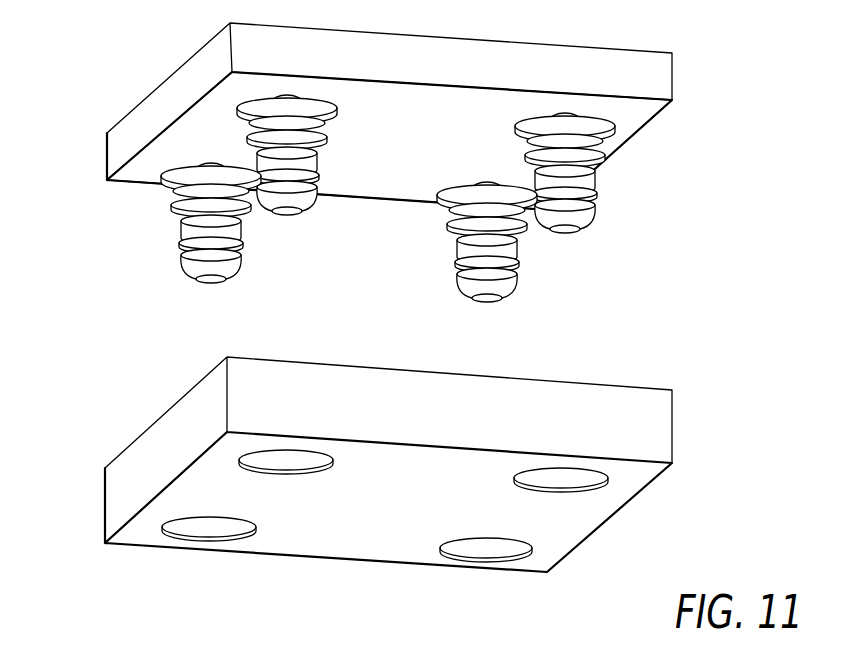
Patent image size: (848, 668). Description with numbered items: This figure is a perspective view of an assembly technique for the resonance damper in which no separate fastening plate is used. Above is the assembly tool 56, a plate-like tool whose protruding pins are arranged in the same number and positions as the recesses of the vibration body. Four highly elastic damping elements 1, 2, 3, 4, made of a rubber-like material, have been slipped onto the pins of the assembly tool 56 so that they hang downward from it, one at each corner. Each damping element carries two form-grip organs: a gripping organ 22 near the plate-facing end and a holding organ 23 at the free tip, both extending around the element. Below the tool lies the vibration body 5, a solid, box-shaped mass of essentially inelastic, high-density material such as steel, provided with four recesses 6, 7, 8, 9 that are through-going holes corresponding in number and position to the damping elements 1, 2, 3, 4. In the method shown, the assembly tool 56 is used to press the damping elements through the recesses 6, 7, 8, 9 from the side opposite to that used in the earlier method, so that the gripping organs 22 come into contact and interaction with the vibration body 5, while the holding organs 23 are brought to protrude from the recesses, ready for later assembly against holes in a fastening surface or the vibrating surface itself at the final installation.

The assembly tool 56 is at (678, 78).
The vibration body 5 is at (686, 427).
The elastic damping element 1 is at (615, 173).
The elastic damping element 2 is at (238, 146).
The elastic damping element 3 is at (143, 234).
The elastic damping element 4 is at (532, 247).
The gripping organ 22 is at (166, 198).
The holding organ 23 is at (171, 251).
The recess 6 is at (573, 477).
The recess 7 is at (290, 458).
The recess 8 is at (215, 527).
The recess 9 is at (480, 546).